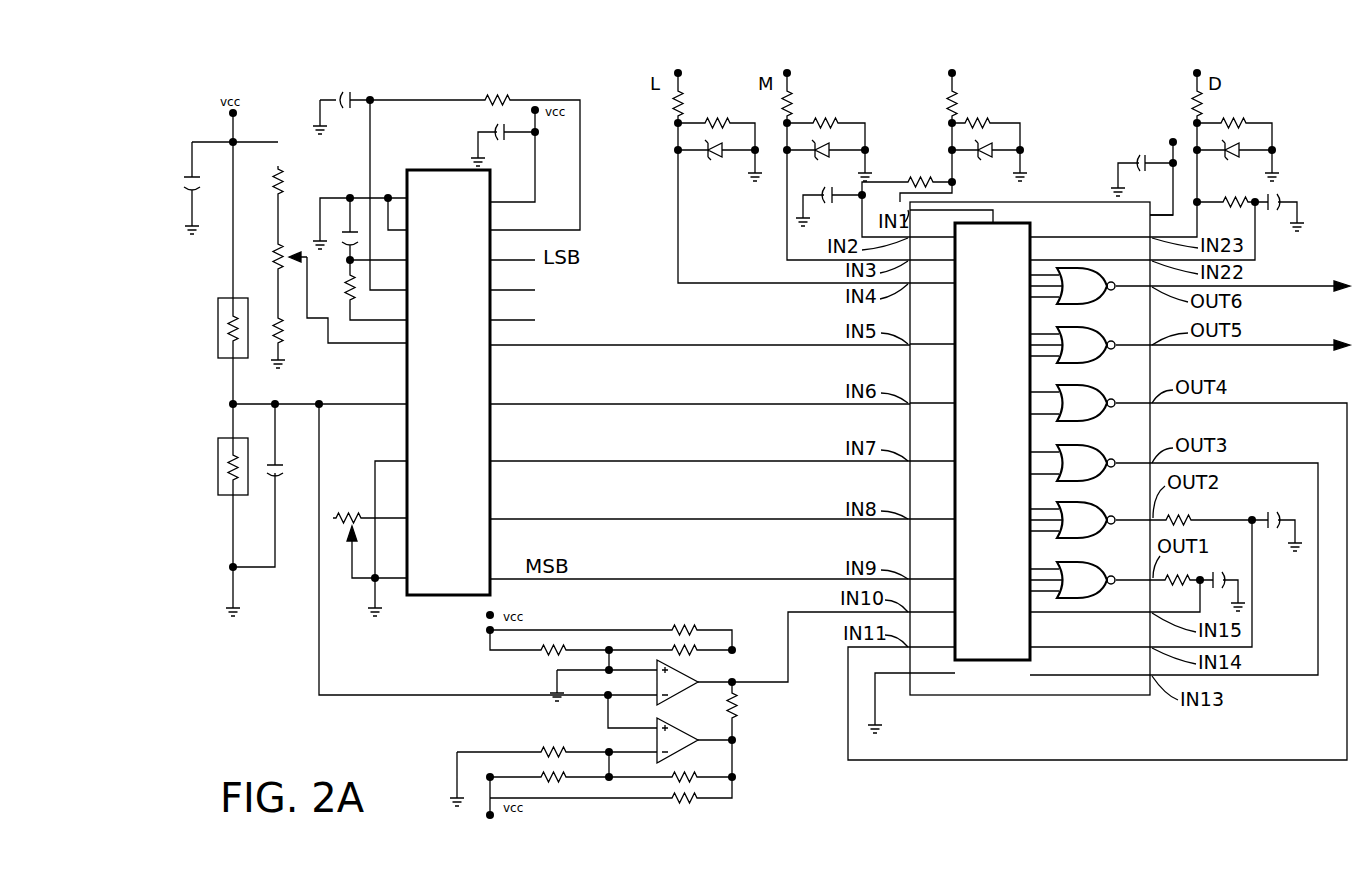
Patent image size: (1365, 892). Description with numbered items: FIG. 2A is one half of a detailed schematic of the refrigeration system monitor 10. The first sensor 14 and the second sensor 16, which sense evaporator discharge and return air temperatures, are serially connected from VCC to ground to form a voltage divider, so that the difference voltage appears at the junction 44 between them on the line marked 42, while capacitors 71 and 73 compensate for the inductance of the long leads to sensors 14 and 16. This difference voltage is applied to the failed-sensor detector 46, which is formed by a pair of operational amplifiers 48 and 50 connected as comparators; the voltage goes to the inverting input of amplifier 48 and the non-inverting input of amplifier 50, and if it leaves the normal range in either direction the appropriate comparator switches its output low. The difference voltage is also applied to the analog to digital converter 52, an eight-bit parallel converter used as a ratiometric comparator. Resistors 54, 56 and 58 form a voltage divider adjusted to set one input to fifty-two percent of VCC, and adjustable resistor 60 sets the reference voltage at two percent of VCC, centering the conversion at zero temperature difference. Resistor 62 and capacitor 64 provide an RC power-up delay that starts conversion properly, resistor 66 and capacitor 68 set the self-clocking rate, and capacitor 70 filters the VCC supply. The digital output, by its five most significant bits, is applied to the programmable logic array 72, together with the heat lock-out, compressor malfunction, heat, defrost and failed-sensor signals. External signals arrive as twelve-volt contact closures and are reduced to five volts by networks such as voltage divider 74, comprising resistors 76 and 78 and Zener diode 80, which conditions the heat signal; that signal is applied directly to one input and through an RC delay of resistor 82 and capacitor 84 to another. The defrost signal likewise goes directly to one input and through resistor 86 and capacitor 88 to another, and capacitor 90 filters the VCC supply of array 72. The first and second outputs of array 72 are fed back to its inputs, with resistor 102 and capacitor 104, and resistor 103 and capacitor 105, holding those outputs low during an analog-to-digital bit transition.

The refrigeration system monitor 10 is at (1058, 802).
The first external sensor 14 is at (218, 333).
The second external sensor 16 is at (218, 470).
The signal line 42 is at (210, 419).
The junction 44 is at (236, 402).
The detector 46 is at (720, 714).
The operational amplifier 48 is at (690, 678).
The operational amplifier 50 is at (690, 746).
The analog to digital converter 52 is at (425, 598).
The resistor 54 is at (286, 185).
The resistor 56 is at (278, 255).
The resistor 58 is at (286, 332).
The adjustable resistor 60 is at (362, 512).
The resistor 62 is at (346, 290).
The capacitor 64 is at (344, 240).
The resistor 66 is at (505, 96).
The capacitor 68 is at (343, 95).
The capacitor 70 is at (496, 128).
The capacitor 71 is at (190, 178).
The programmable logic array 72 is at (1040, 697).
The capacitor 73 is at (279, 464).
The voltage divider 74 is at (964, 135).
The resistor 76 is at (946, 100).
The resistor 78 is at (992, 126).
The Zener diode 80 is at (988, 158).
The resistor 82 is at (930, 176).
The capacitor 84 is at (826, 186).
The resistor 86 is at (1238, 196).
The capacitor 88 is at (1281, 193).
The capacitor 90 is at (1136, 158).
The resistor 102 is at (1190, 586).
The resistor 103 is at (1192, 518).
The capacitor 104 is at (1220, 576).
The capacitor 105 is at (1268, 512).